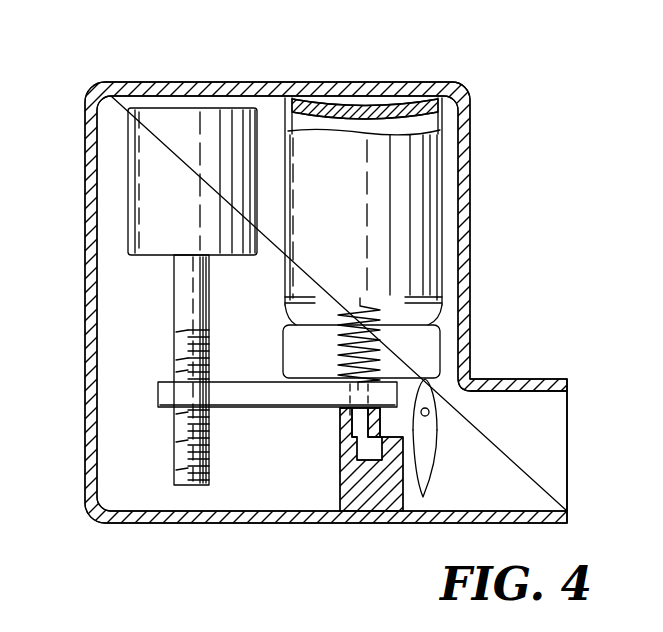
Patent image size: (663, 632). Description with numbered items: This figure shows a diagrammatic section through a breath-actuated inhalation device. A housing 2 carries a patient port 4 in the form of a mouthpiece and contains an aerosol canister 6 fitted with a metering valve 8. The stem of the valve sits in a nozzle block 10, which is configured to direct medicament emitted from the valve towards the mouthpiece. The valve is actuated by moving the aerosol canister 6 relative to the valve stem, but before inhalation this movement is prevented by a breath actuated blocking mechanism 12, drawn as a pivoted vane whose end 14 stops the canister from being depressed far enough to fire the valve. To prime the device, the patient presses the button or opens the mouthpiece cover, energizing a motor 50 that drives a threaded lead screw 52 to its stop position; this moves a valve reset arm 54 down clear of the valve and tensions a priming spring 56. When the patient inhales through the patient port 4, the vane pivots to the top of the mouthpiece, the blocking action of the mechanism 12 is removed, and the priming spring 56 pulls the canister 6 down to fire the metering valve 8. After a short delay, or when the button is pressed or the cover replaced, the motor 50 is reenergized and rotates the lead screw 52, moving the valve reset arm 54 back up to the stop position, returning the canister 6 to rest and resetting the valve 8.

The housing 2 is at (131, 86).
The patient port 4 is at (553, 435).
The aerosol canister 6 is at (423, 196).
The metering valve 8 is at (362, 418).
The nozzle block 10 is at (358, 488).
The breath actuated blocking mechanism 12 is at (423, 462).
The end of vane 14 is at (432, 388).
The motor 50 is at (138, 172).
The threaded lead screw 52 is at (183, 322).
The valve reset arm 54 is at (255, 404).
The priming spring 56 is at (386, 330).